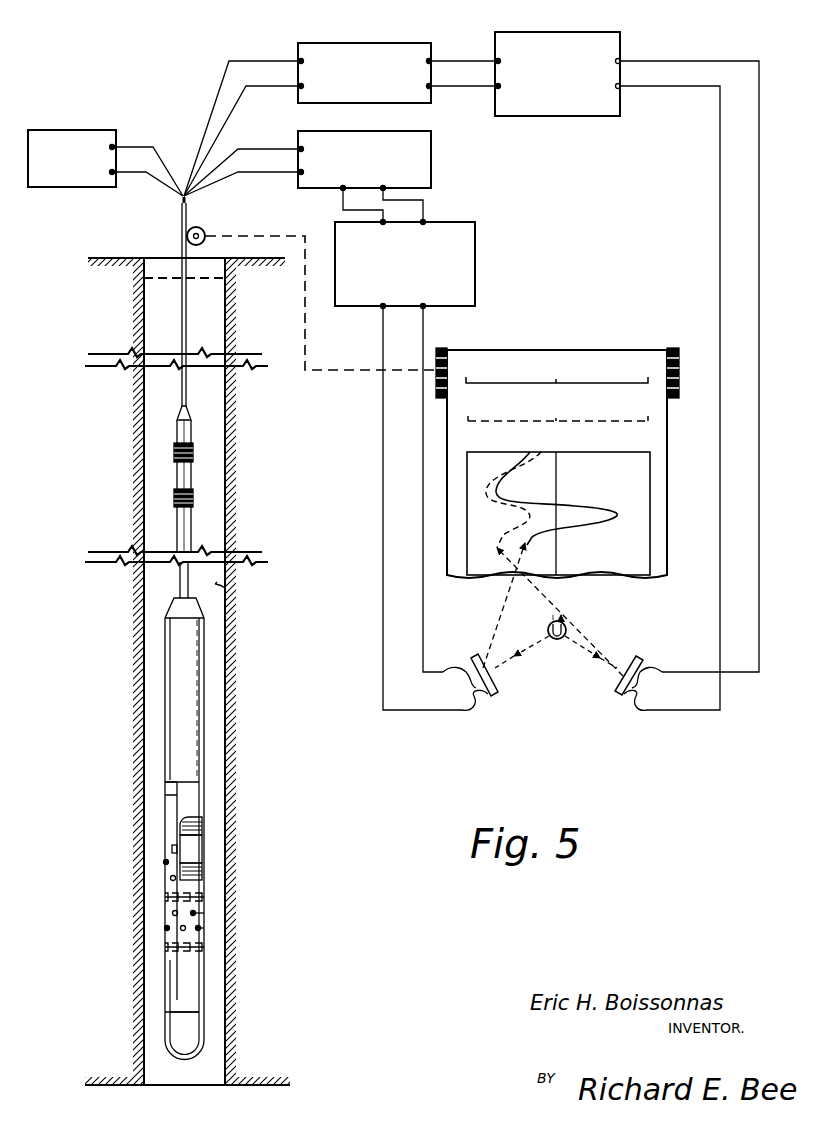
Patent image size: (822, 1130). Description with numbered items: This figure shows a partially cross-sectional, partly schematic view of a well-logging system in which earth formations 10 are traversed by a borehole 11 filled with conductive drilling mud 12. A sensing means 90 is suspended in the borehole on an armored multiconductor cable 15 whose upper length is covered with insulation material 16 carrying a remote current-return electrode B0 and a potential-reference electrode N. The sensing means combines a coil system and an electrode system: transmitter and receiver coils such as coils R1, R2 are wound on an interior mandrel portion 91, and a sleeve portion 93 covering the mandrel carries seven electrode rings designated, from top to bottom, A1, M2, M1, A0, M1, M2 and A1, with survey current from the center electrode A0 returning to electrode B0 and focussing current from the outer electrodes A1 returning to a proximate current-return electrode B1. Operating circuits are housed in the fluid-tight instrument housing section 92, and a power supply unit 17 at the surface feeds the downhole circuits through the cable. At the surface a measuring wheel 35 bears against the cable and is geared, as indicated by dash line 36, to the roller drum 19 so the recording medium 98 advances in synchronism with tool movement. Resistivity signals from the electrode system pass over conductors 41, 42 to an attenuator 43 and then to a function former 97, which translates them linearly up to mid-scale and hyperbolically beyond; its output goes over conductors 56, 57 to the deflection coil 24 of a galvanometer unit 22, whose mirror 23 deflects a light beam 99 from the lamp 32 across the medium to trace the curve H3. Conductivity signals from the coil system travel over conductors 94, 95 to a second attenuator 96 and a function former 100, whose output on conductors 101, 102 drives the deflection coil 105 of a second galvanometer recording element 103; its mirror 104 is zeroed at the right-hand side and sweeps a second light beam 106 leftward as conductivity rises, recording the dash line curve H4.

The earth formations 10 is at (256, 659).
The borehole 11 is at (225, 585).
The drilling mud 12 is at (170, 321).
The armored multiconductor cable 15 is at (182, 394).
The insulation material 16 is at (177, 476).
The power supply unit 17 is at (70, 130).
The roller drum 19 is at (441, 348).
The galvanometer unit 22 is at (497, 731).
The galvanometer mirror 23 is at (497, 692).
The deflection coil 24 is at (458, 682).
The lamp 32 is at (548, 630).
The measuring wheel 35 is at (204, 230).
The dash line 36 is at (305, 340).
The conductor 41 is at (278, 149).
The conductor 42 is at (250, 172).
The attenuator 43 is at (432, 156).
The conductor 56 is at (423, 488).
The conductor 57 is at (383, 468).
The sensing means 90 is at (165, 702).
The interior mandrel portion 91 is at (192, 850).
The instrument housing section 92 is at (168, 641).
The sleeve portion 93 is at (177, 797).
The conductor 94 is at (258, 61).
The conductor 95 is at (262, 86).
The attenuator 96 is at (362, 43).
The function former 97 is at (475, 262).
The recording medium 98 is at (447, 462).
The light beam 99 is at (503, 608).
The function former 100 is at (558, 32).
The conductor 101 is at (722, 61).
The conductor 102 is at (660, 87).
The galvanometer recording element 103 is at (636, 731).
The light-reflecting mirror 104 is at (642, 658).
The galvanometer deflection coil 105 is at (640, 686).
The light beam 106 is at (587, 639).
The remote current-return electrode B0 is at (193, 452).
The potential-reference electrode N is at (193, 497).
The coil R2 is at (202, 820).
The coil R1 is at (202, 875).
The focussing current electrode A1 is at (165, 947).
The survey current electrode A0 is at (165, 897).
The electrode ring M1 is at (266, 912).
The electrode ring M2 is at (266, 935).
The electrically-proximate current-return electrode B1 is at (165, 1031).
The curve H3 is at (592, 531).
The curve H4 is at (512, 520).